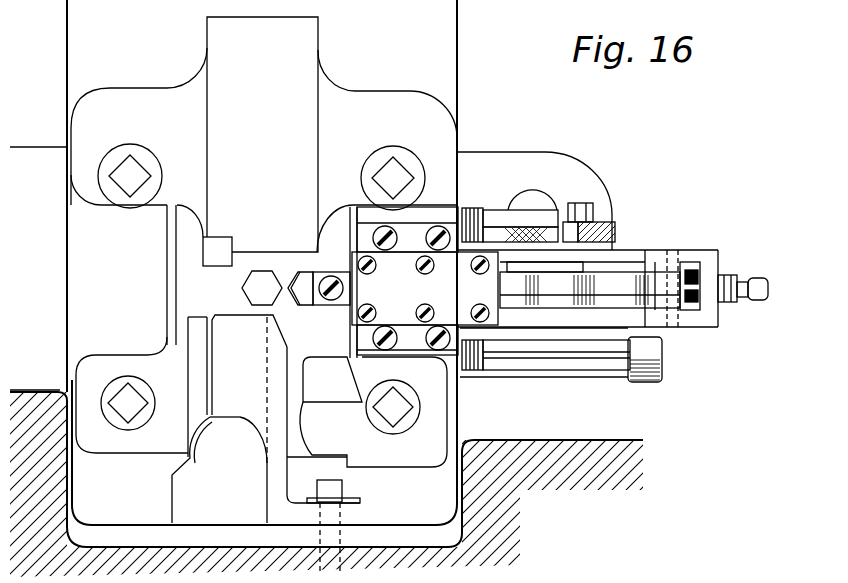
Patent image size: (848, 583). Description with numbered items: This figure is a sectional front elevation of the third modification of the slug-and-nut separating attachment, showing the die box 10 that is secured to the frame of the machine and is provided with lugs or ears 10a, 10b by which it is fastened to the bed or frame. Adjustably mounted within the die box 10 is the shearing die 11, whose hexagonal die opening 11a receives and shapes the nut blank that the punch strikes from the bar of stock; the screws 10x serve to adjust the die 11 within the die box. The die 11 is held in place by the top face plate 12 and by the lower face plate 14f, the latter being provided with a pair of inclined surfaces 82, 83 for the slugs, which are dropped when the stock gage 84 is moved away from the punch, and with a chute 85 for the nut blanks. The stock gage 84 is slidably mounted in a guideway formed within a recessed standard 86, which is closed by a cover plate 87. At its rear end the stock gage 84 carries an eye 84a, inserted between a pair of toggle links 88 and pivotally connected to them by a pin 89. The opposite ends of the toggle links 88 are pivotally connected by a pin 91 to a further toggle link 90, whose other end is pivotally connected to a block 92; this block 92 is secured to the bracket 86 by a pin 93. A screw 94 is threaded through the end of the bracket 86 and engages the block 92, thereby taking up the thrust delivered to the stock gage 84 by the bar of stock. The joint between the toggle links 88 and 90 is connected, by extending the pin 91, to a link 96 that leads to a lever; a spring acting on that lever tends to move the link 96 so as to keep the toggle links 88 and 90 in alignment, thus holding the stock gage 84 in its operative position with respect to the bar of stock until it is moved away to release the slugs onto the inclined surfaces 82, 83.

The die box 10 is at (424, 291).
The lug 10a is at (530, 163).
The lug 10b is at (35, 328).
The screw 10x is at (537, 217).
The shearing die 11 is at (183, 272).
The hexagonal die opening 11a is at (243, 293).
The top face plate 12 is at (247, 141).
The lower face plate 14f is at (248, 389).
The inclined surface 82 is at (325, 282).
The inclined surface 83 is at (332, 379).
The stock gage 84 is at (303, 272).
The eye 84a is at (530, 263).
The chute 85 is at (234, 403).
The recessed standard 86 is at (419, 236).
The cover plate 87 is at (425, 288).
The toggle links 88 is at (553, 272).
The pin 89 is at (515, 233).
The toggle link 90 is at (637, 250).
The pin 91 is at (583, 203).
The block 92 is at (658, 300).
The pin 93 is at (673, 253).
The screw 94 is at (738, 278).
The link 96 is at (612, 228).